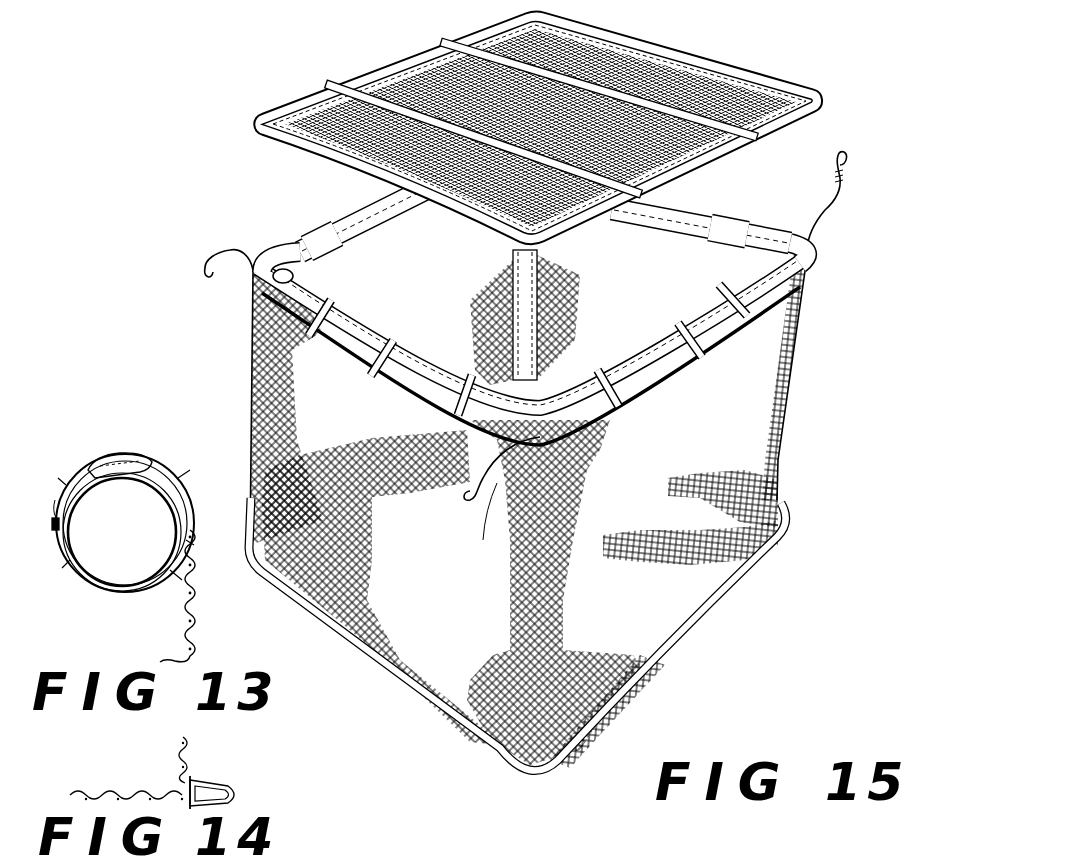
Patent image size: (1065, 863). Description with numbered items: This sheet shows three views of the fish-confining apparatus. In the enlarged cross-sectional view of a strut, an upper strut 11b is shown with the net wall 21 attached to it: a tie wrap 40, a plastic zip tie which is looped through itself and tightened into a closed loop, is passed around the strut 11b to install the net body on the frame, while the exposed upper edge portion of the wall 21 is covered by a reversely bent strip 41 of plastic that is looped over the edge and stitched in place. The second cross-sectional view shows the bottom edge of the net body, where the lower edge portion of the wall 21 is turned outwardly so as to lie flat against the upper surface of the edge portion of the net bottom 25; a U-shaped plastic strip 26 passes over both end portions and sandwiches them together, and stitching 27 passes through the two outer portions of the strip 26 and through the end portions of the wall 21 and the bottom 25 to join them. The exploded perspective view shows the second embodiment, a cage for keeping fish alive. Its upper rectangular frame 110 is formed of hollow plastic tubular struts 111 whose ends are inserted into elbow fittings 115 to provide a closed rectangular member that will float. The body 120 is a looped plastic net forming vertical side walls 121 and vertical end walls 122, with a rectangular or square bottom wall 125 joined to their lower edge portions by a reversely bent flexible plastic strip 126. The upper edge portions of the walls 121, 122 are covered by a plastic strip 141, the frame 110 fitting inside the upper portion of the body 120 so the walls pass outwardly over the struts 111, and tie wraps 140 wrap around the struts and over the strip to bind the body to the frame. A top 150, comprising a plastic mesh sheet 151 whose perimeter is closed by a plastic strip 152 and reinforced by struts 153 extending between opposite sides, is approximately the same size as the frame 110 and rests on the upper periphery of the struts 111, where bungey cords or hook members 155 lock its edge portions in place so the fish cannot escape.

In FIG. 15, the upper rectangular frame 110 is at (533, 313).
In FIG. 15, the tubular struts 111 is at (383, 232).
In FIG. 15, the elbow fittings 115 is at (281, 248).
In FIG. 15, the body 120 is at (762, 405).
In FIG. 15, the vertical side walls 121 is at (358, 578).
In FIG. 15, the vertical end walls 122 is at (492, 304).
In FIG. 15, the bottom wall 125 is at (677, 550).
In FIG. 15, the reversely bent flexible plastic strip 126 is at (680, 636).
In FIG. 15, the tie wraps 140 is at (703, 345).
In FIG. 15, the plastic strip 141 is at (370, 336).
In FIG. 15, the top 150 is at (538, 128).
In FIG. 15, the plastic mesh sheet 151 is at (753, 87).
In FIG. 15, the plastic strip 152 is at (700, 58).
In FIG. 15, the struts 153 is at (593, 82).
In FIG. 15, the hook members 155 is at (199, 266).
In FIG. 13, the tie wraps 40 is at (163, 484).
In FIG. 13, the strip 41 is at (122, 455).
In FIG. 13, the upper strut 11b is at (124, 594).
In FIG. 13, the wall 21 is at (188, 600).
In FIG. 14, the wall 21 is at (185, 752).
In FIG. 14, the net bottom 25 is at (134, 791).
In FIG. 14, the U-shaped plastic strip 26 is at (234, 802).
In FIG. 14, the stitching 27 is at (194, 780).